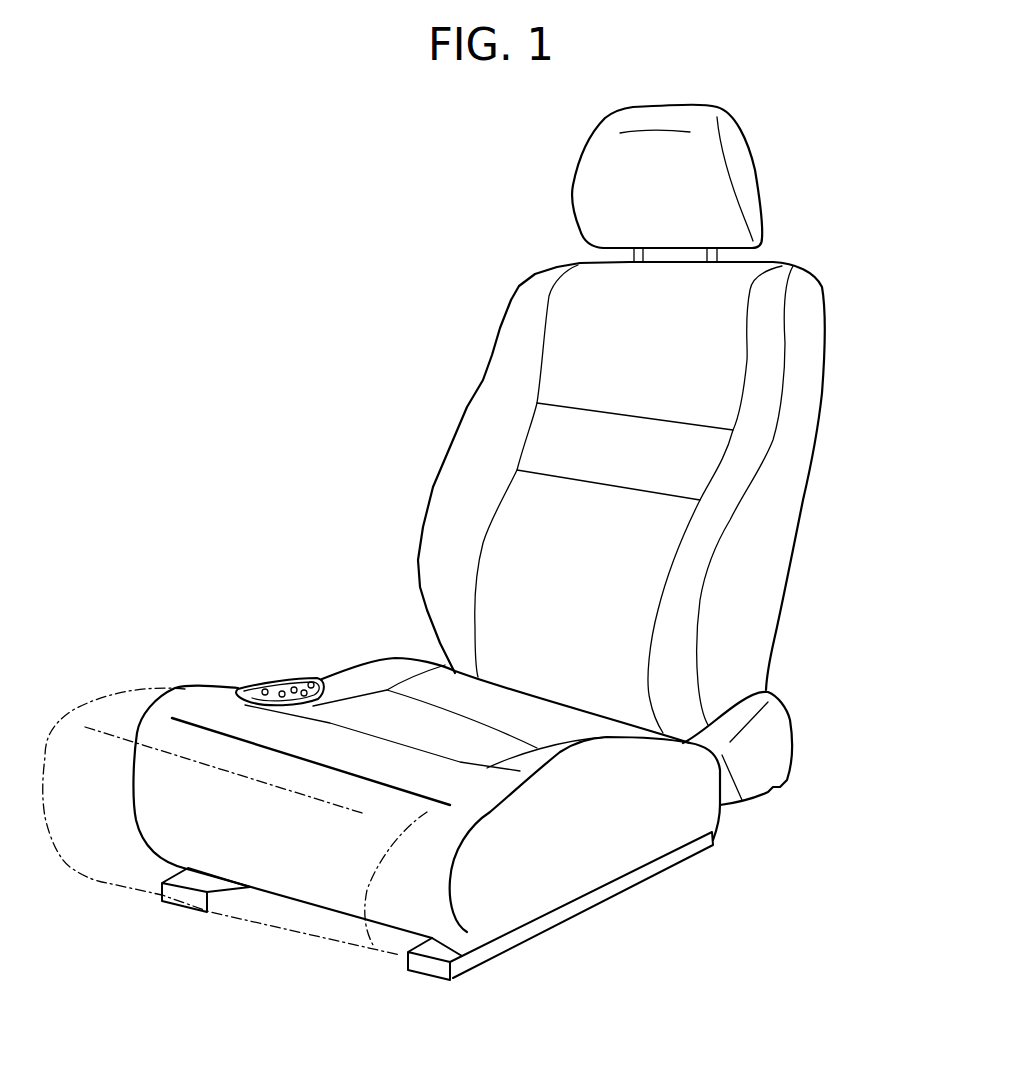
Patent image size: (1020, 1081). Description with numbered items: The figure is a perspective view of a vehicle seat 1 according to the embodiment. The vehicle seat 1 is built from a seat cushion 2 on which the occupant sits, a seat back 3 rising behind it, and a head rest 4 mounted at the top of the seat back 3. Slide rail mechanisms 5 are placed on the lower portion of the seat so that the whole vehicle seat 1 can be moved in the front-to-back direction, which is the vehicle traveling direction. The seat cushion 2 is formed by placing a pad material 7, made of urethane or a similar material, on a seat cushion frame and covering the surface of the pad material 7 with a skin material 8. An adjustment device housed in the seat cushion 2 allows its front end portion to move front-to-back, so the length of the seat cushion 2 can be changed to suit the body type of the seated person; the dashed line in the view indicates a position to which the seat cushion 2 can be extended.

The vehicle seat 1 is at (265, 214).
The seat cushion 2 is at (800, 730).
The seat back 3 is at (817, 461).
The head rest 4 is at (766, 170).
The slide rail mechanisms 5 is at (182, 915).
The pad material 7 is at (283, 686).
The skin material 8 is at (360, 677).